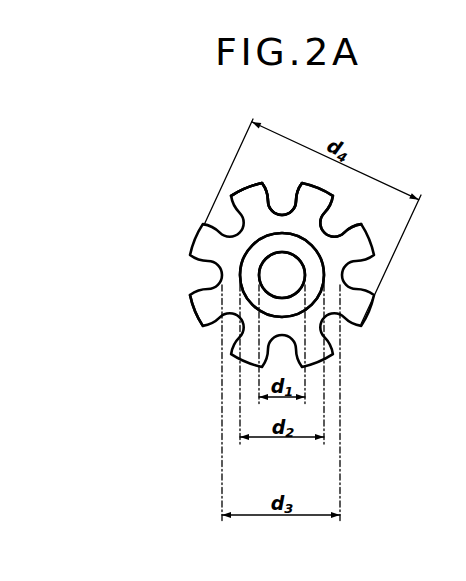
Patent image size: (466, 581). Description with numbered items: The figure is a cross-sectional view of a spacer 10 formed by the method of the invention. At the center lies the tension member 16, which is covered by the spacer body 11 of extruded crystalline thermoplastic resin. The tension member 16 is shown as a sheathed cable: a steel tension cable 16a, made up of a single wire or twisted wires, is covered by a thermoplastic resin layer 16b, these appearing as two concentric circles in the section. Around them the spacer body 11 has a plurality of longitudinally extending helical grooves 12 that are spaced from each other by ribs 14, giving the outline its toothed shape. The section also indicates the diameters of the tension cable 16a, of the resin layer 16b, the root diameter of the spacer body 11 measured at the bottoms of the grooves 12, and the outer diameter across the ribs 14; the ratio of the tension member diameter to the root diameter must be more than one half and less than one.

The spacer 10 is at (370, 335).
The spacer body 11 is at (242, 106).
The helical grooves 12 is at (280, 212).
The ribs 14 is at (247, 198).
The tension member 16 is at (117, 218).
The tension cable 16a is at (274, 274).
The thermoplastic resin layer 16b is at (260, 256).